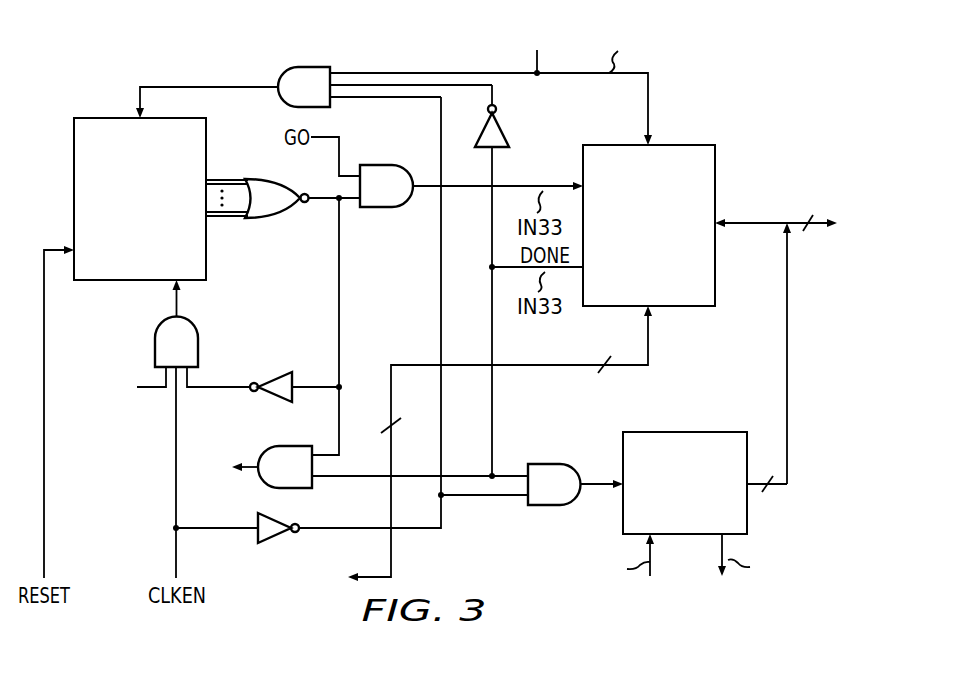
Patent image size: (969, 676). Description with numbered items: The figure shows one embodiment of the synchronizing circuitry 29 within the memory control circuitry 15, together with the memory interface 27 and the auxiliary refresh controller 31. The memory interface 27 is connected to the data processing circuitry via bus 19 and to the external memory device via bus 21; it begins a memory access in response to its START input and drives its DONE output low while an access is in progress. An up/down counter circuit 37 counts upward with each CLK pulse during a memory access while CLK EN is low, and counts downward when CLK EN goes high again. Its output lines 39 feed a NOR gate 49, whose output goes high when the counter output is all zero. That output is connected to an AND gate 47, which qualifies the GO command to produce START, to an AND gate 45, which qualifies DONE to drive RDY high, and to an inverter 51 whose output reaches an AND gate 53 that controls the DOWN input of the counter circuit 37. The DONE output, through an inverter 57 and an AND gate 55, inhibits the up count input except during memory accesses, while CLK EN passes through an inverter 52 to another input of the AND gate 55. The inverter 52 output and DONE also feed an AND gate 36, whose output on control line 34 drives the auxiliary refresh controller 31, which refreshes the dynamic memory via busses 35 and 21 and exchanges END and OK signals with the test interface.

The memory control circuitry 15 is at (156, 52).
The up/down counter circuit 37 is at (100, 118).
The AND gate 55 is at (310, 66).
The synchronizing circuitry 29 is at (362, 48).
The NOR gate 49 is at (262, 178).
The output line 39 is at (227, 225).
The AND gate 47 is at (390, 209).
The inverter 57 is at (503, 126).
The memory interface 27 is at (690, 145).
The bus 21 is at (748, 221).
The bus 35 is at (787, 343).
The AND gate 53 is at (155, 350).
The inverter 51 is at (277, 372).
The AND gate 45 is at (262, 447).
The AND gate 36 is at (575, 478).
The auxiliary refresh controller 31 is at (683, 432).
The control line 34 is at (591, 487).
The bus 19 is at (391, 548).
The inverter 52 is at (277, 545).